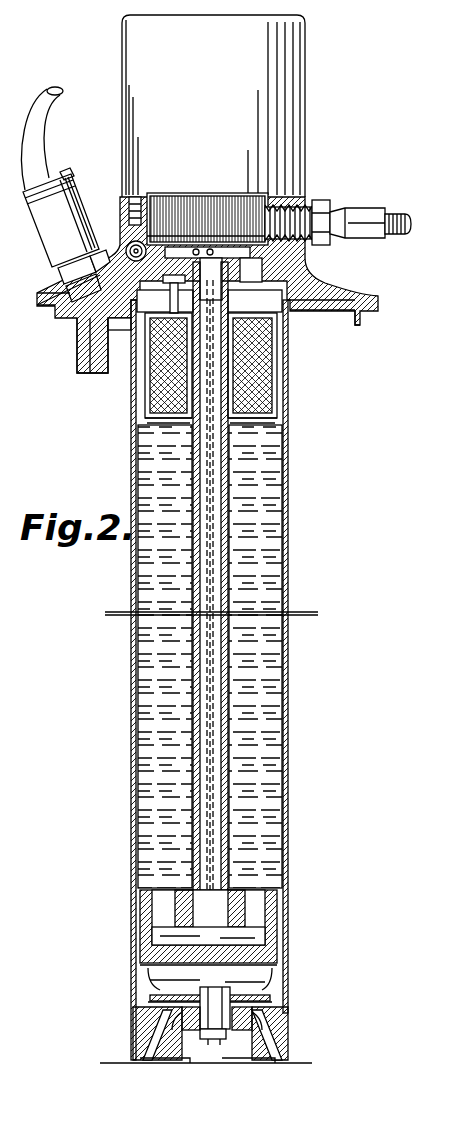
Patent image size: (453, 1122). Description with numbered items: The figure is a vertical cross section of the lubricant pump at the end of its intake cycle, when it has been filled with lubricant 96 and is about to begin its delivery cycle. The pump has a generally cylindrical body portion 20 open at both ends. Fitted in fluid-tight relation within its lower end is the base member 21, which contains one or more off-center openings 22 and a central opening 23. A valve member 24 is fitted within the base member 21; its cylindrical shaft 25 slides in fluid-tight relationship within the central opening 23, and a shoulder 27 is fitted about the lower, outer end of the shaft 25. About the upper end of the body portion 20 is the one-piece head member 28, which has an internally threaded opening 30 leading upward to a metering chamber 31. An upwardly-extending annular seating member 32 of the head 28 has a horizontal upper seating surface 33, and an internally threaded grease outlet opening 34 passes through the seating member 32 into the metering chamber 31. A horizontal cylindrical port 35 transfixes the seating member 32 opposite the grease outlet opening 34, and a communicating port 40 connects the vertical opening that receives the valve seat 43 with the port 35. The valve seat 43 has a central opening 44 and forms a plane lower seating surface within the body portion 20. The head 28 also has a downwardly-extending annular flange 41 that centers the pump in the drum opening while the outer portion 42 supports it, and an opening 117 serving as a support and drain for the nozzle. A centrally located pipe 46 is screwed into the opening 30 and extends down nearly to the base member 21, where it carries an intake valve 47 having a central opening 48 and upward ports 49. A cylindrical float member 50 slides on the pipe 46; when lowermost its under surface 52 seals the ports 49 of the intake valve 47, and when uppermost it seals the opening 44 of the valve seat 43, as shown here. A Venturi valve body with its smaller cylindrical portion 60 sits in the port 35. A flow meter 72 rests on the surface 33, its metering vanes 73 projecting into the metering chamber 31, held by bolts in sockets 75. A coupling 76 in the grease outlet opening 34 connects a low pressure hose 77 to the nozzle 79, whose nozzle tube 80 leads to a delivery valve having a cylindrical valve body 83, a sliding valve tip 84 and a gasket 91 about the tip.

The body portion 20 is at (289, 546).
The base member 21 is at (140, 1022).
The openings 22 is at (265, 1026).
The central opening 23 is at (210, 1034).
The valve member 24 is at (270, 993).
The cylindrical shaft 25 is at (214, 991).
The shoulder 27 is at (216, 1045).
The head member 28 is at (384, 289).
The internally threaded opening 30 is at (232, 292).
The metering chamber 31 is at (285, 258).
The annular seating member 32 is at (118, 220).
The upper seating surface 33 is at (300, 200).
The grease outlet opening 34 is at (318, 206).
The cylindrical port 35 is at (128, 245).
The communicating port 40 is at (145, 310).
The annular flange 41 is at (85, 322).
The outer portion 42 is at (45, 305).
The valve seat 43 is at (162, 335).
The central opening 44 is at (182, 308).
The pipe 46 is at (220, 485).
The intake valve 47 is at (278, 908).
The central opening 48 is at (250, 936).
The ports 49 is at (156, 894).
The float member 50 is at (262, 378).
The under surface 52 is at (262, 426).
The cylindrical portion 60 is at (246, 253).
The flow meter 72 is at (305, 113).
The metering vanes 73 is at (228, 215).
The sockets 75 is at (144, 200).
The coupling 76 is at (362, 214).
The low pressure hose 77 is at (402, 215).
The nozzle 79 is at (45, 116).
The nozzle tube 80 is at (66, 172).
The valve body 83 is at (64, 225).
The valve tip 84 is at (88, 273).
The gasket 91 is at (62, 266).
The lubricant 96 is at (275, 665).
The opening 117 is at (70, 290).